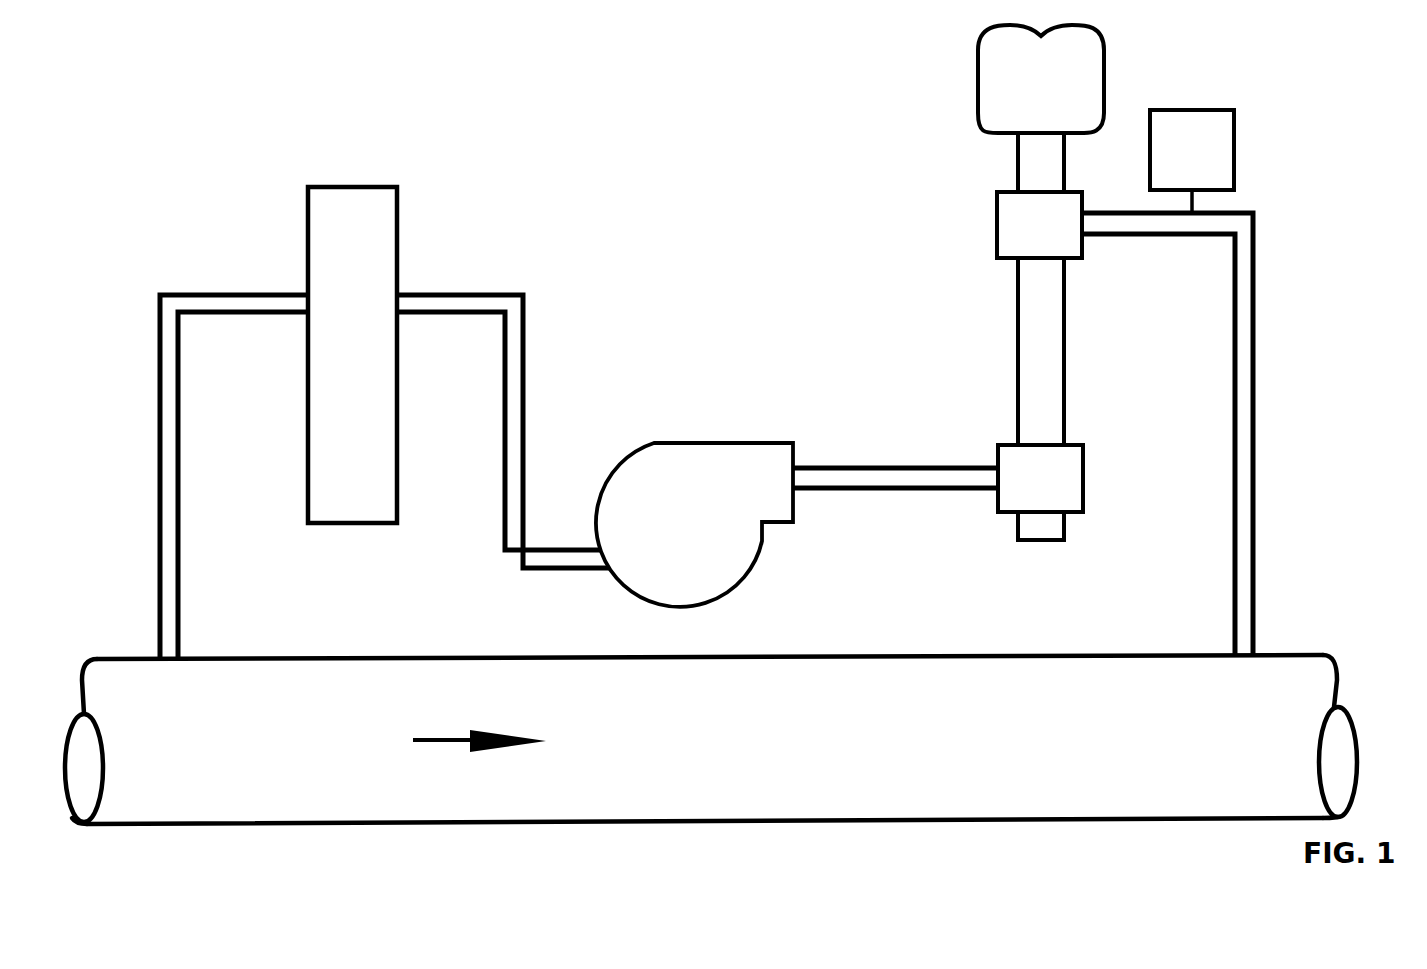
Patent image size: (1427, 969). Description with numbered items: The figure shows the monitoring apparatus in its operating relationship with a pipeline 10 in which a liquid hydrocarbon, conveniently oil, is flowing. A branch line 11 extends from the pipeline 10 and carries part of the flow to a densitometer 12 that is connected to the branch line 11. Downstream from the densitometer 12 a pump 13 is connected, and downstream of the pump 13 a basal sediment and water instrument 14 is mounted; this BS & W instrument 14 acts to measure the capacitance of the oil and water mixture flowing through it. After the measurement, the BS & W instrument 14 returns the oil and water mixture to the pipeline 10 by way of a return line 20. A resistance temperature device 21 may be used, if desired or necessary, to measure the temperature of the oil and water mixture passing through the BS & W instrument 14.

The pipeline 10 is at (101, 654).
The branch line 11 is at (205, 293).
The densitometer 12 is at (397, 214).
The pump 13 is at (690, 443).
The basal sediment and water instrument 14 is at (978, 88).
The return line 20 is at (1253, 394).
The resistance temperature device 21 is at (1234, 152).